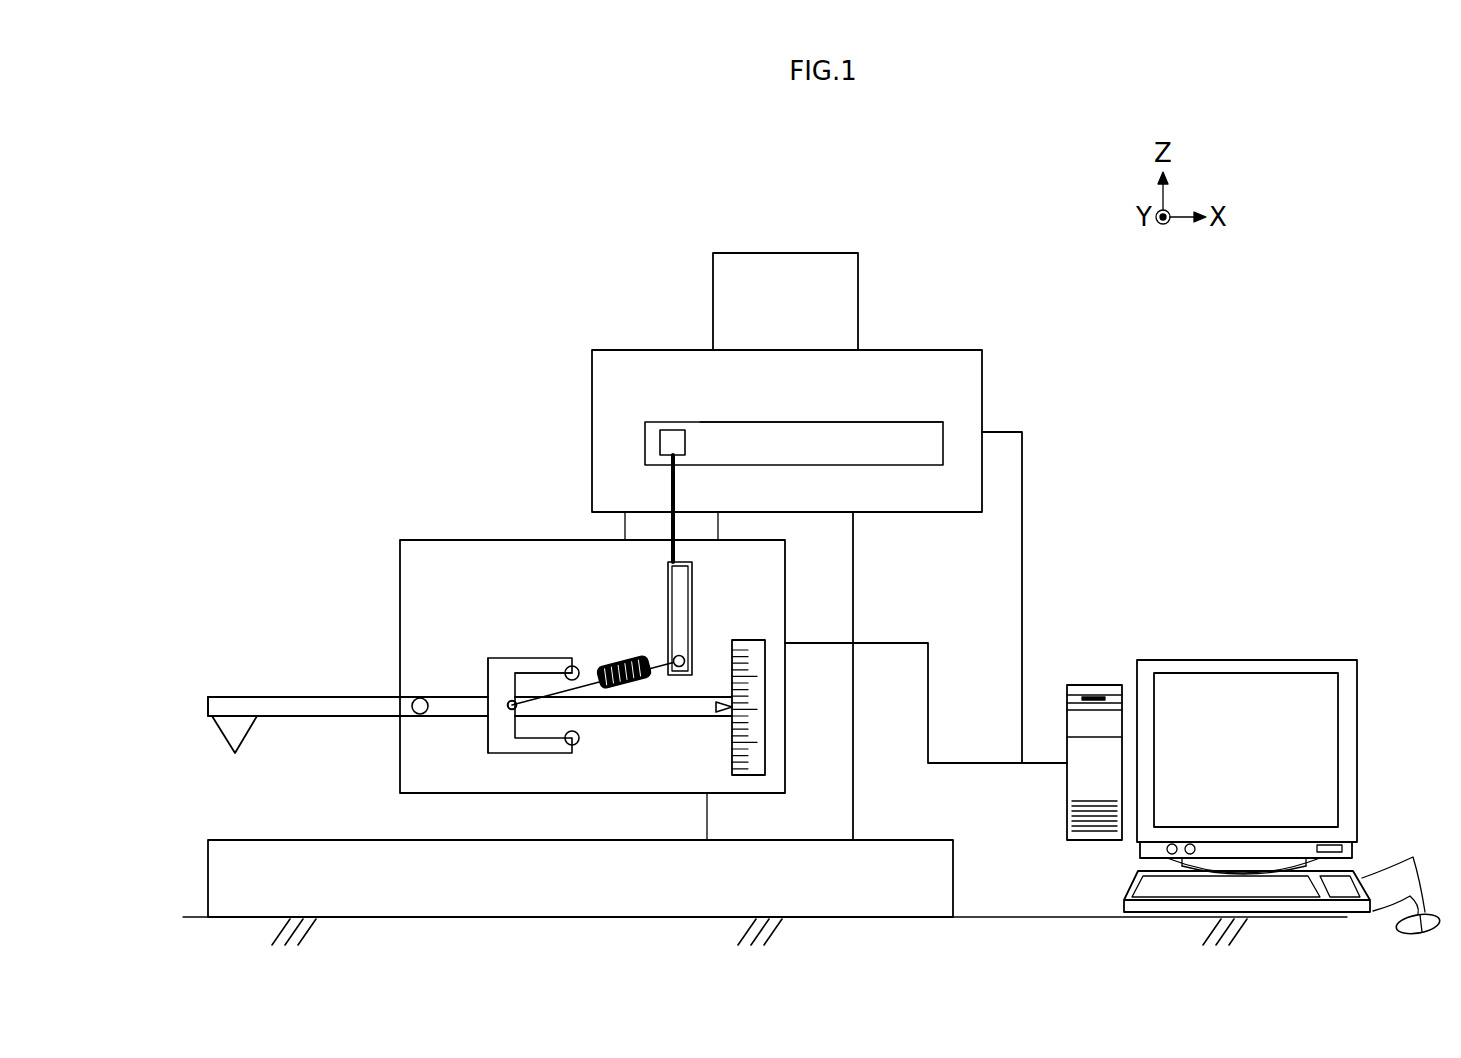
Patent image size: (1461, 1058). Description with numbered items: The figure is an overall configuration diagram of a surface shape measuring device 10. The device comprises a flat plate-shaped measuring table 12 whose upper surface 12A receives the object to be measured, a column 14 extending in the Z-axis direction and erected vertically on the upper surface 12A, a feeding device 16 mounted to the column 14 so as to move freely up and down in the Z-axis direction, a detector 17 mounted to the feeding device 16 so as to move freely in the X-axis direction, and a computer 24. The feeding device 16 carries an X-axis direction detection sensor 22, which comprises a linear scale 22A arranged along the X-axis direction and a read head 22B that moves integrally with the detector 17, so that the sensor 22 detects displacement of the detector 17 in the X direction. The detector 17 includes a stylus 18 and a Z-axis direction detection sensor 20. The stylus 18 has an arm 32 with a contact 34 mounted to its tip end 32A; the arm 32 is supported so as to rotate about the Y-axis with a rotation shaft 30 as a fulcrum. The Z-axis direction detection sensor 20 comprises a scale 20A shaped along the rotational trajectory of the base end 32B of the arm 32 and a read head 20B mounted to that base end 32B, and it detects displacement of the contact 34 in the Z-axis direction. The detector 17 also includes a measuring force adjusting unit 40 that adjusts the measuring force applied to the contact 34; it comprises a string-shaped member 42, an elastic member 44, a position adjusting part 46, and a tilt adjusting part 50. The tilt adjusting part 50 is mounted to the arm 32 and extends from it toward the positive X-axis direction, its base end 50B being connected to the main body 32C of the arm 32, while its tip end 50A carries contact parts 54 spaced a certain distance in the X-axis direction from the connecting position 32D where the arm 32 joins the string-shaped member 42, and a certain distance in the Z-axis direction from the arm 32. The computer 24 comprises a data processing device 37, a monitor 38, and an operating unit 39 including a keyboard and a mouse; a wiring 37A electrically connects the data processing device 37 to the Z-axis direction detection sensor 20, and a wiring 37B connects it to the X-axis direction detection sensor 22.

The surface shape measuring device 10 is at (958, 242).
The measuring table 12 is at (905, 840).
The upper surface 12A is at (354, 836).
The column 14 is at (790, 254).
The feeding device 16 is at (622, 353).
The detector 17 is at (470, 540).
The stylus 18 is at (178, 698).
The Z-axis direction detection sensor 20 is at (770, 636).
The scale 20A is at (750, 640).
The read head 20B is at (720, 711).
The X-axis direction detection sensor 22 is at (802, 416).
The linear scale 22A is at (900, 426).
The read head 22B is at (674, 428).
The computer 24 is at (1316, 644).
The rotation shaft 30 is at (420, 697).
The arm 32 is at (252, 680).
The tip end 32A is at (206, 720).
The base end 32B is at (724, 730).
The main body 32C is at (322, 697).
The connecting position 32D is at (509, 709).
The contact 34 is at (244, 730).
The data processing device 37 is at (1097, 685).
The wiring 37A is at (894, 642).
The wiring 37B is at (1024, 546).
The monitor 38 is at (1250, 660).
The operating unit 39 is at (1402, 881).
The measuring force adjusting unit 40 is at (557, 560).
The string-shaped member 42 is at (532, 717).
The elastic member 44 is at (628, 664).
The position adjusting part 46 is at (667, 574).
The tilt adjusting part 50 is at (534, 636).
The tip end 50A is at (568, 652).
The base end 50B is at (480, 666).
The contact parts 54 is at (577, 670).